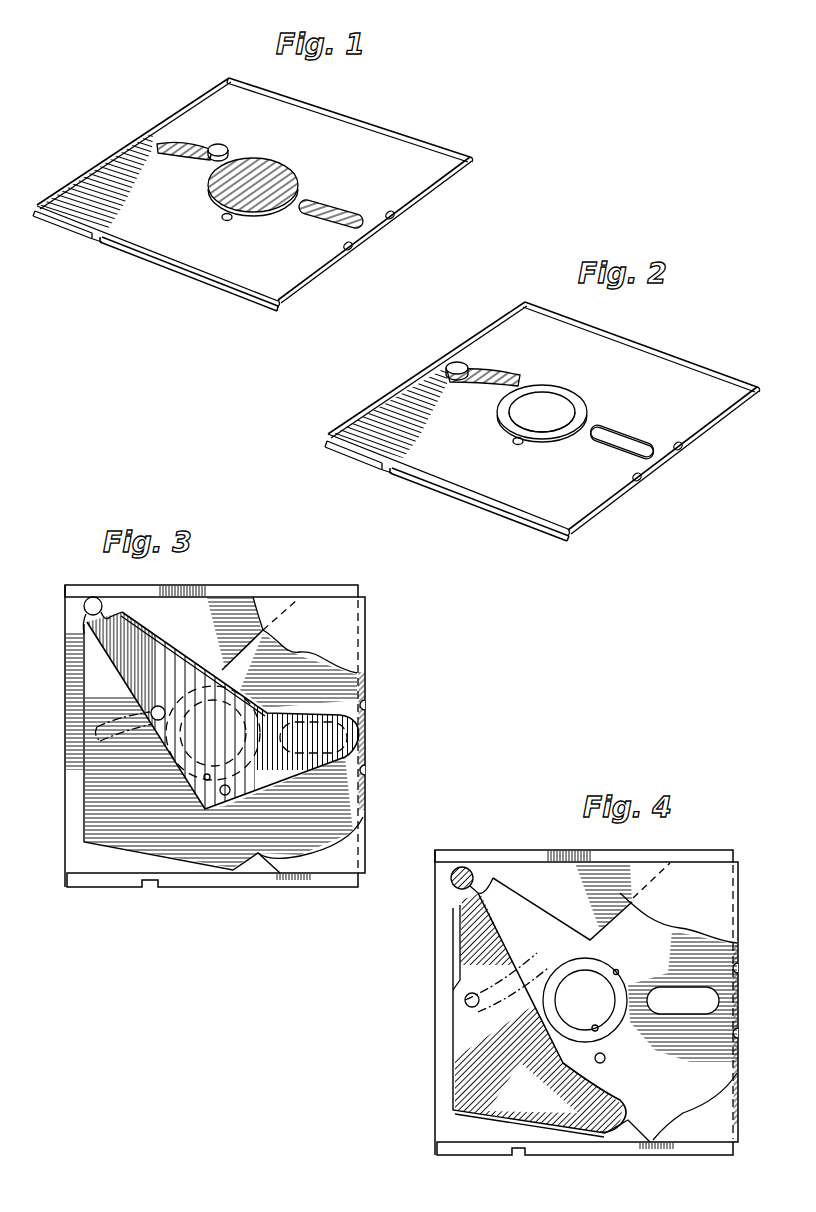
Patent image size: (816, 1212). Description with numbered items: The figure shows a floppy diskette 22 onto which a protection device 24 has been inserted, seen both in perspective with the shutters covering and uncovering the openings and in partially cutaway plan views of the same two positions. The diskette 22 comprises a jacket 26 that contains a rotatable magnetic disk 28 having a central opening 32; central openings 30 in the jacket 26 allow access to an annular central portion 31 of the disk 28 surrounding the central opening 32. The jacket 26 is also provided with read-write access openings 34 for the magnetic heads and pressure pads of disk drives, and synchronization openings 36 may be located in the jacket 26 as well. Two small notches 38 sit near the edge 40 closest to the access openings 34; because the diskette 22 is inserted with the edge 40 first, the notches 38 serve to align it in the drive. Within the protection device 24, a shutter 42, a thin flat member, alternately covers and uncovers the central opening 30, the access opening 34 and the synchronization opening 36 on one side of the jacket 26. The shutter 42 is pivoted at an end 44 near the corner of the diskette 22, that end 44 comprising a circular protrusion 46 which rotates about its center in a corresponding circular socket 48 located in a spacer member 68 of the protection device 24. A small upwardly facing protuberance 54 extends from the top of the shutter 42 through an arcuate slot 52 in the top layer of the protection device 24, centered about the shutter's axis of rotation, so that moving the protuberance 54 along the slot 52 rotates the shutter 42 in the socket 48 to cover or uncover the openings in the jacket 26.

In FIG. 1, the floppy diskette 22 is at (396, 122).
In FIG. 2, the floppy diskette 22 is at (668, 343).
In FIG. 3, the floppy diskette 22 is at (258, 582).
In FIG. 4, the floppy diskette 22 is at (690, 846).
In FIG. 1, the protection device 24 is at (428, 170).
In FIG. 2, the protection device 24 is at (699, 394).
In FIG. 3, the protection device 24 is at (304, 620).
In FIG. 4, the protection device 24 is at (712, 900).
In FIG. 1, the jacket 26 is at (212, 280).
In FIG. 2, the jacket 26 is at (351, 436).
In FIG. 3, the jacket 26 is at (242, 879).
In FIG. 4, the jacket 26 is at (598, 1150).
In FIG. 2, the rotatable magnetic disk 28 is at (548, 394).
In FIG. 3, the rotatable magnetic disk 28 is at (213, 733).
In FIG. 4, the rotatable magnetic disk 28 is at (597, 960).
In FIG. 1, the central openings 30 is at (270, 207).
In FIG. 2, the central openings 30 is at (546, 433).
In FIG. 3, the central openings 30 is at (193, 795).
In FIG. 4, the central openings 30 is at (620, 971).
In FIG. 2, the annular central portion 31 is at (578, 405).
In FIG. 4, the annular central portion 31 is at (617, 1018).
In FIG. 2, the central opening 32 is at (538, 394).
In FIG. 3, the central opening 32 is at (194, 757).
In FIG. 4, the central opening 32 is at (598, 1031).
In FIG. 1, the read-write access openings 34 is at (335, 205).
In FIG. 2, the read-write access openings 34 is at (655, 455).
In FIG. 3, the read-write access openings 34 is at (372, 738).
In FIG. 4, the read-write access openings 34 is at (720, 1002).
In FIG. 1, the synchronization openings 36 is at (223, 221).
In FIG. 2, the synchronization openings 36 is at (514, 446).
In FIG. 3, the synchronization openings 36 is at (232, 794).
In FIG. 4, the synchronization openings 36 is at (604, 1063).
In FIG. 1, the notches 38 is at (395, 217).
In FIG. 2, the notches 38 is at (683, 447).
In FIG. 3, the notches 38 is at (368, 704).
In FIG. 4, the notches 38 is at (742, 965).
In FIG. 1, the edge 40 is at (276, 308).
In FIG. 2, the edge 40 is at (573, 540).
In FIG. 3, the edge 40 is at (361, 594).
In FIG. 4, the edge 40 is at (738, 852).
In FIG. 3, the shutter 42 is at (142, 640).
In FIG. 4, the shutter 42 is at (470, 1027).
In FIG. 3, the end 44 is at (90, 597).
In FIG. 4, the end 44 is at (458, 868).
In FIG. 3, the circular protrusion 46 is at (85, 611).
In FIG. 4, the circular protrusion 46 is at (453, 905).
In FIG. 3, the circular socket 48 is at (105, 616).
In FIG. 4, the circular socket 48 is at (483, 889).
In FIG. 1, the arcuate slot 52 is at (162, 146).
In FIG. 2, the arcuate slot 52 is at (478, 376).
In FIG. 3, the arcuate slot 52 is at (83, 756).
In FIG. 4, the arcuate slot 52 is at (538, 955).
In FIG. 1, the protuberance 54 is at (229, 149).
In FIG. 2, the protuberance 54 is at (447, 366).
In FIG. 3, the protuberance 54 is at (156, 707).
In FIG. 4, the protuberance 54 is at (466, 997).
In FIG. 3, the spacer member 68 is at (76, 824).
In FIG. 4, the spacer member 68 is at (447, 1088).